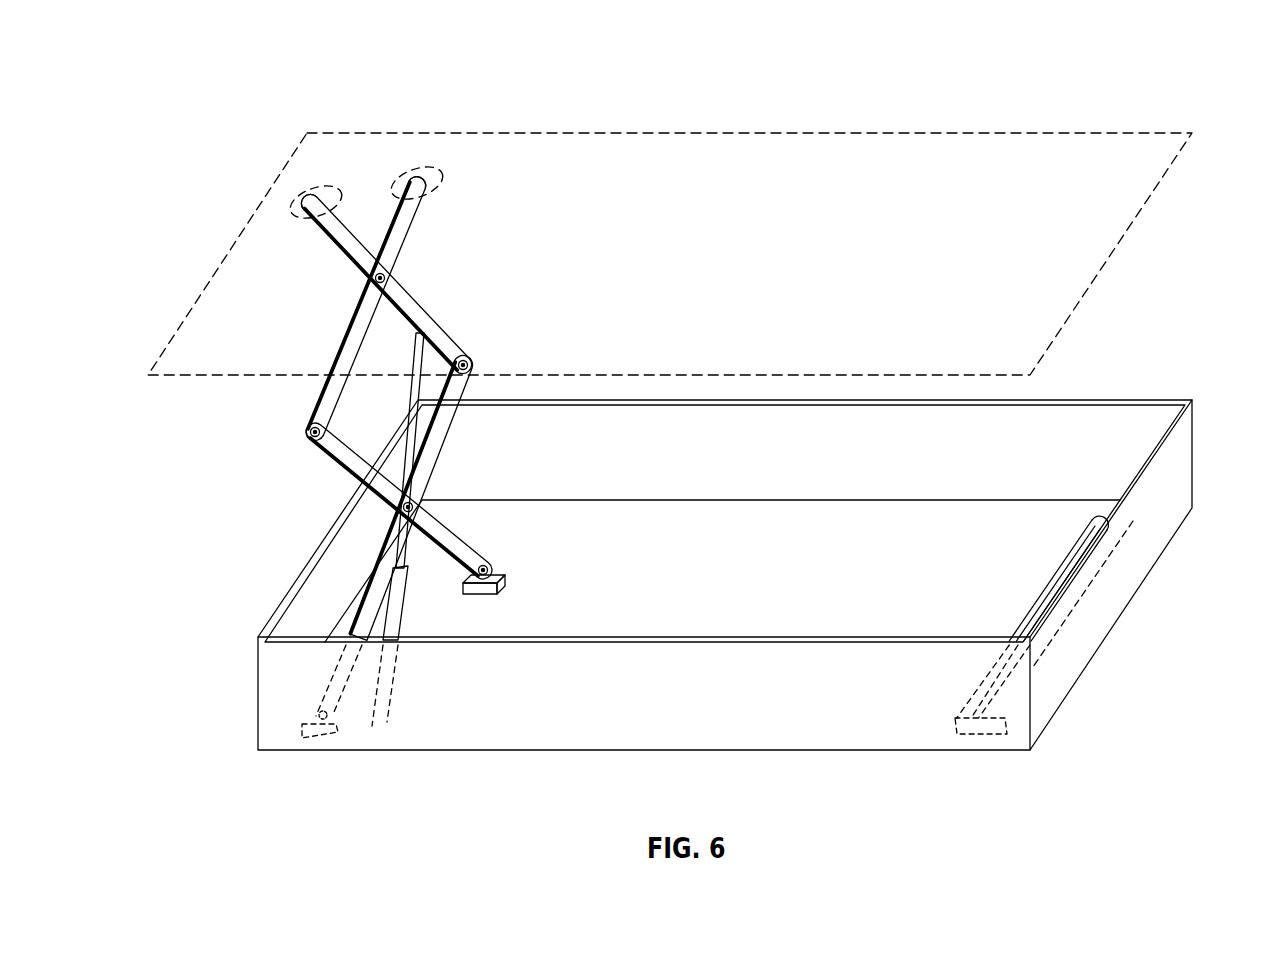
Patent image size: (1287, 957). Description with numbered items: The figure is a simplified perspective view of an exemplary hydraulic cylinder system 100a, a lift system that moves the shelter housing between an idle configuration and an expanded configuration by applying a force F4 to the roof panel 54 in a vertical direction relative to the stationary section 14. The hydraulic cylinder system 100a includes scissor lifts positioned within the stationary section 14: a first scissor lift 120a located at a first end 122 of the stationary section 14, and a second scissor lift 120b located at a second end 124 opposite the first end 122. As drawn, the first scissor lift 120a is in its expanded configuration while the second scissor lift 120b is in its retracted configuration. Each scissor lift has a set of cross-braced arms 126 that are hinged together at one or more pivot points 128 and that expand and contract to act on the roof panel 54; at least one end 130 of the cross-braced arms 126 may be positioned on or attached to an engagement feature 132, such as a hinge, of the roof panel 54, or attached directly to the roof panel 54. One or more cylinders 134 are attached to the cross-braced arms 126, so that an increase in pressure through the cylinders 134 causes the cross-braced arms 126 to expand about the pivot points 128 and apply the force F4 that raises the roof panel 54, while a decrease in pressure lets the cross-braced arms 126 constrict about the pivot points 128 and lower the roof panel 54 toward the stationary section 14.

The hydraulic cylinder system 100a is at (1166, 91).
The roof panel 54 is at (885, 160).
The force F4 is at (213, 392).
The stationary section 14 is at (1133, 574).
The first scissor lift 120a is at (380, 413).
The second scissor lift 120b is at (1036, 625).
The first end 122 is at (449, 590).
The second end 124 is at (1061, 554).
The cross-braced arms 126 is at (360, 329).
The pivot points 128 is at (388, 276).
The end 130 is at (350, 243).
The engagement feature 132 is at (428, 178).
The cylinders 134 is at (397, 629).